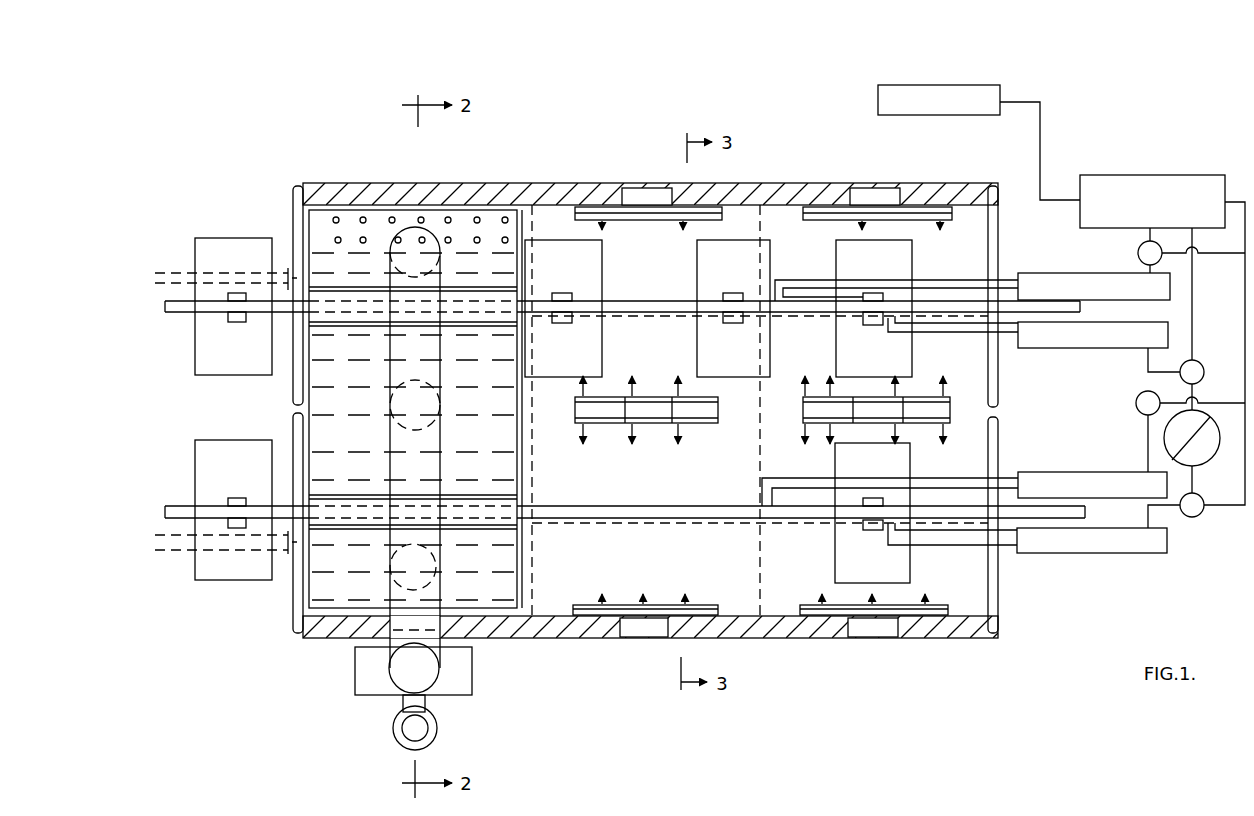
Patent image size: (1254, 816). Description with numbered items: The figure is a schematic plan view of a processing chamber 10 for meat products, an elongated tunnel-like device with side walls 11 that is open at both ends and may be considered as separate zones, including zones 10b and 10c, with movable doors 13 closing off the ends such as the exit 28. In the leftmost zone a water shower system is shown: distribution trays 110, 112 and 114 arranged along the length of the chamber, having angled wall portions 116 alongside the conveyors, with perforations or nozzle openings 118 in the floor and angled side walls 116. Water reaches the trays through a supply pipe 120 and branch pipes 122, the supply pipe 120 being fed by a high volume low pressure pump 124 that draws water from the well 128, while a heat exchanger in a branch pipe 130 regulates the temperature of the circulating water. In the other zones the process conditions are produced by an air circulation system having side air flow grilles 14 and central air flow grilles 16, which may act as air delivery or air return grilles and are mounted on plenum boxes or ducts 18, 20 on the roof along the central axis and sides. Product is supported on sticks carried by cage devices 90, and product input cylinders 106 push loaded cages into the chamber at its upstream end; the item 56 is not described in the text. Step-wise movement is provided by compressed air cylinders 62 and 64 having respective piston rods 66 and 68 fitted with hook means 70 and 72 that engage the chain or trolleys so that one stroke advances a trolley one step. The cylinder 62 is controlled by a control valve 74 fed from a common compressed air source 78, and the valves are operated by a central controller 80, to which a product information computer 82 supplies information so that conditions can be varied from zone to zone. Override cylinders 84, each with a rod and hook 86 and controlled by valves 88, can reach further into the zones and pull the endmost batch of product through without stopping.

The processing chamber 10 is at (553, 160).
The second zone 10b is at (622, 238).
The third zone 10c is at (803, 238).
The side walls 11 is at (580, 638).
The movable doors 13 is at (293, 198).
The side air flow grilles 14 is at (655, 221).
The central air flow grilles 16 is at (612, 423).
The plenum boxes or ducts 18 is at (650, 190).
The plenum boxes or ducts 20 is at (690, 420).
The exit 28 is at (975, 455).
The clamp 56 is at (730, 292).
The compressed air cylinder 62 is at (1060, 348).
The compressed air cylinder 64 is at (1115, 553).
The piston rod 66 is at (1012, 340).
The piston rod 68 is at (1008, 530).
The hook means 70 is at (890, 342).
The hook means 72 is at (890, 545).
The control valve 74 is at (1180, 375).
The compressed air source 78 is at (1165, 440).
The central controller 80 is at (1152, 175).
The product information computer 82 is at (878, 100).
The override cylinders 84 is at (1045, 273).
The rod and hook 86 is at (945, 280).
The valves 88 is at (1138, 250).
The cage device 90 is at (697, 340).
The product input cylinders 106 is at (240, 272).
The distribution tray 110 is at (466, 278).
The distribution tray 112 is at (466, 372).
The distribution tray 114 is at (333, 563).
The angled wall portions 116 is at (320, 345).
The nozzle openings 118 is at (364, 237).
The supply pipe 120 is at (398, 390).
The branch pipes 122 is at (428, 240).
The high volume low pressure pump 124 is at (355, 665).
The well 128 is at (437, 728).
The branch pipe 130 is at (402, 728).